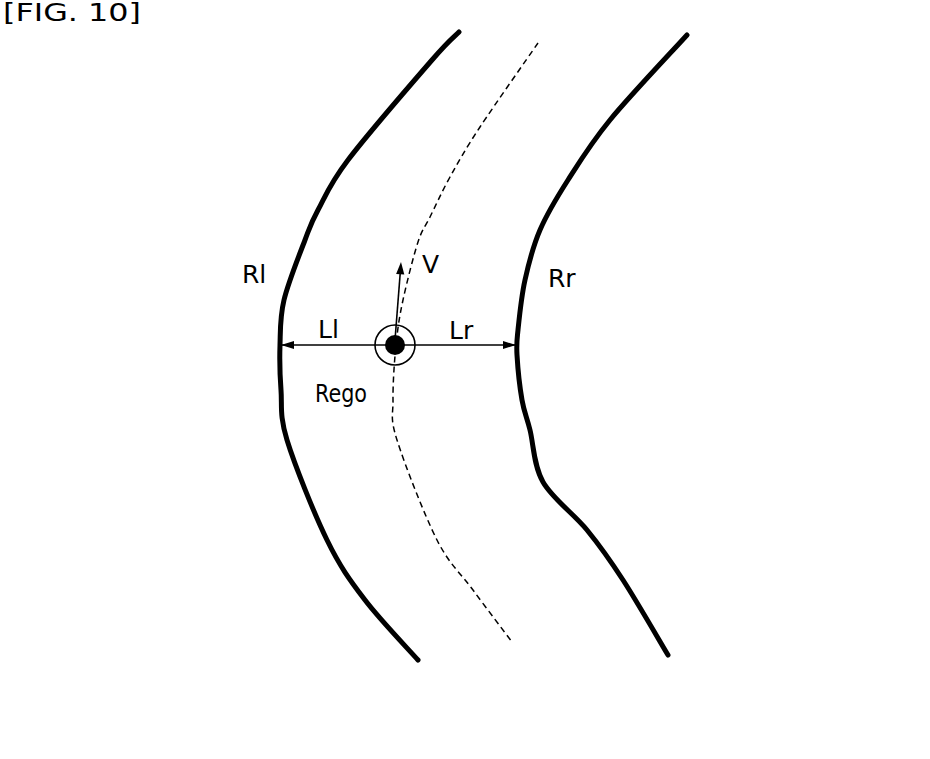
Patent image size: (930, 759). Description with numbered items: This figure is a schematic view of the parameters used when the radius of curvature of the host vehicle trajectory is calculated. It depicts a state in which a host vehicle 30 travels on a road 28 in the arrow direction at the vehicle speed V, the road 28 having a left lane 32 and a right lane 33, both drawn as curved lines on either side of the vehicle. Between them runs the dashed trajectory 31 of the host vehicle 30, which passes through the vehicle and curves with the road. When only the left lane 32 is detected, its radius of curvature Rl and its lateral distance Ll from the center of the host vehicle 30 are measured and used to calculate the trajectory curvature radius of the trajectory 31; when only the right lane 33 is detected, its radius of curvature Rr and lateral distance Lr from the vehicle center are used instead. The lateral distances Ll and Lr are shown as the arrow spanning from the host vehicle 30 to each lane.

The road 28 is at (508, 500).
The host vehicle 30 is at (411, 357).
The trajectory 31 is at (535, 54).
The left lane 32 is at (318, 211).
The right lane 33 is at (600, 141).